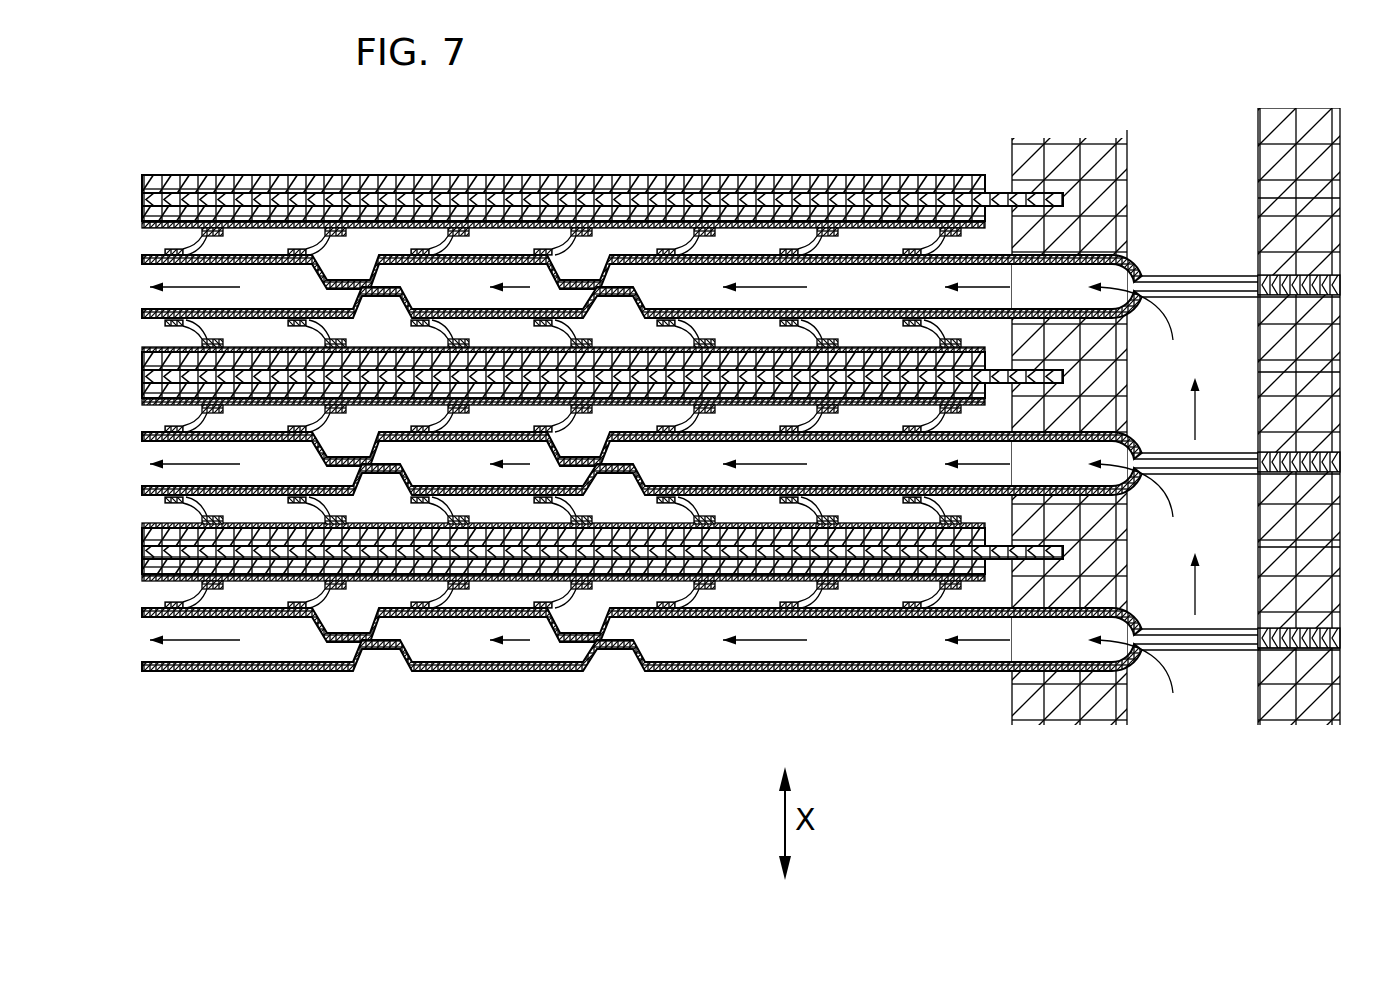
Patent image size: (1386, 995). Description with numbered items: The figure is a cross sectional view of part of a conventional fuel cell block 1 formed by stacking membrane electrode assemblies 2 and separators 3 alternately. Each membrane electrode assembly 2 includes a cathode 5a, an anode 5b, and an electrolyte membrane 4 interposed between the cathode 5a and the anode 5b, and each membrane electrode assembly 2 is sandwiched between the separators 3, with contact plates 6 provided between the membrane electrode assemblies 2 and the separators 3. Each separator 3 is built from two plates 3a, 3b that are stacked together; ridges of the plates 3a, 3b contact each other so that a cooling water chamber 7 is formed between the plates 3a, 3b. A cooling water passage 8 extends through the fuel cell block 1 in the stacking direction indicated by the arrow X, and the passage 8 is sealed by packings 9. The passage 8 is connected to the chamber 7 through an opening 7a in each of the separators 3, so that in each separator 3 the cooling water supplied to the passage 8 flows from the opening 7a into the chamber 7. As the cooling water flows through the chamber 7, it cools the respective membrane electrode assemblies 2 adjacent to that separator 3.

The fuel cell block 1 is at (325, 132).
The membrane electrode assembly 2 is at (624, 336).
The separator 3 is at (218, 686).
The plate 3a is at (618, 650).
The plate 3b is at (700, 620).
The electrolyte membrane 4 is at (863, 551).
The cathode 5a is at (800, 538).
The anode 5b is at (893, 565).
The contact plate 6 is at (833, 228).
The cooling water chamber 7 is at (460, 646).
The opening 7a is at (1132, 662).
The cooling water passage 8 is at (1200, 153).
The packing 9 is at (1066, 165).